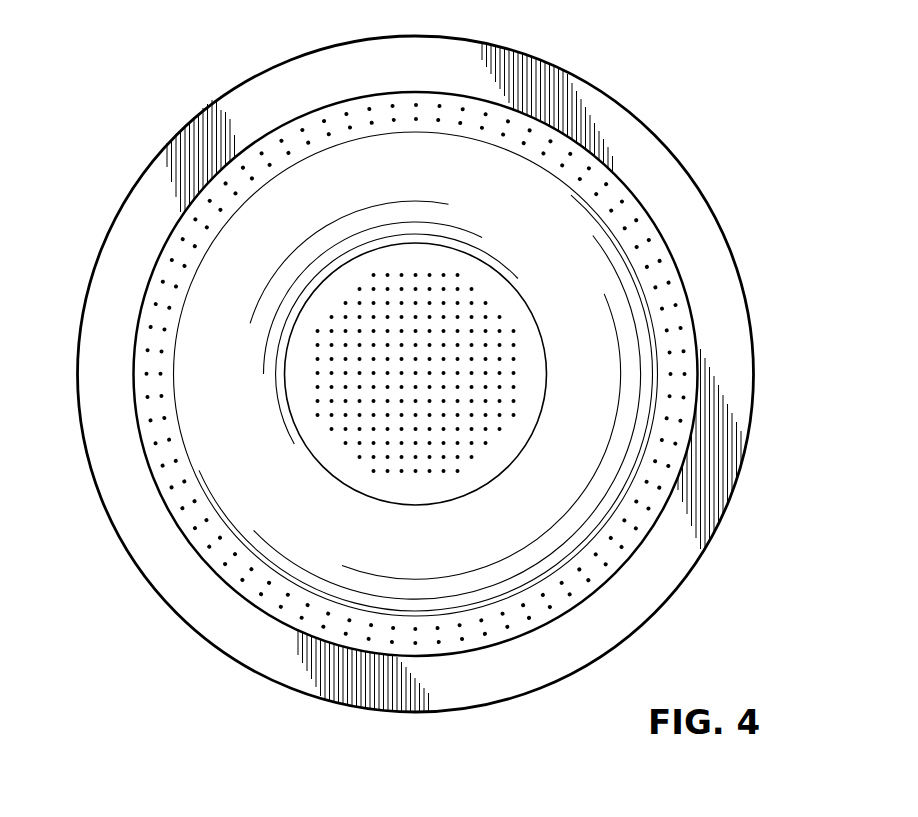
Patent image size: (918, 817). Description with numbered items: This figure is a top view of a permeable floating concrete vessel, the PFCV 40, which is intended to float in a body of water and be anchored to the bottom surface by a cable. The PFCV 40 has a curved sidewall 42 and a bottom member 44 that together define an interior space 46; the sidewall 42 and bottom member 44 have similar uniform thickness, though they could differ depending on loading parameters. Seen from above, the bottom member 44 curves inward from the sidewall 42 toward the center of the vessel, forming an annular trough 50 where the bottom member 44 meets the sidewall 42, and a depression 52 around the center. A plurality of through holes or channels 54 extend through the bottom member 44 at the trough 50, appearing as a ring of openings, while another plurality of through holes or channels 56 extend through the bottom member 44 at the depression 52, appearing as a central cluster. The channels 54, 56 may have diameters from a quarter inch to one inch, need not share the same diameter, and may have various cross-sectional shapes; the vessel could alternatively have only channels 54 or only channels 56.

The permeable floating concrete vessel 40 is at (630, 76).
The curved sidewall 42 is at (756, 340).
The bottom member 44 is at (508, 214).
The interior space 46 is at (612, 193).
The trough 50 is at (315, 130).
The depression 52 is at (320, 308).
The through holes or channels 54 is at (662, 306).
The through holes or channels 56 is at (500, 346).